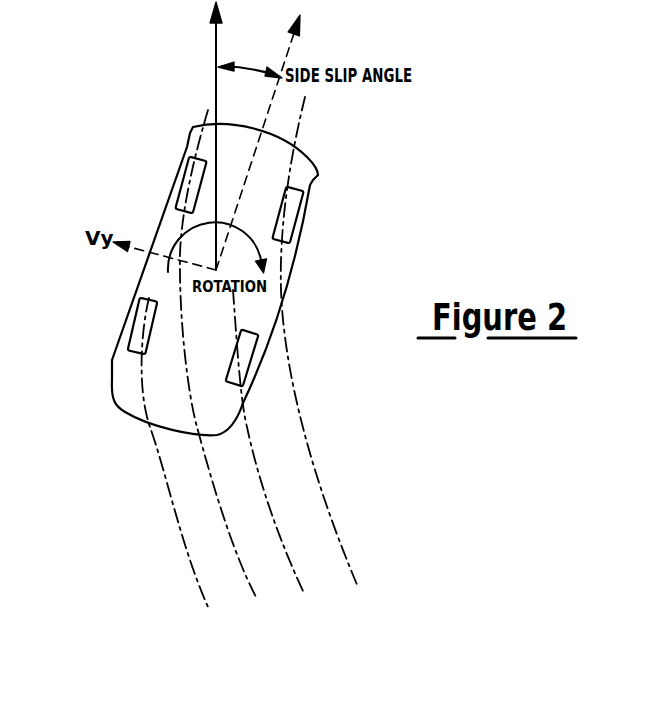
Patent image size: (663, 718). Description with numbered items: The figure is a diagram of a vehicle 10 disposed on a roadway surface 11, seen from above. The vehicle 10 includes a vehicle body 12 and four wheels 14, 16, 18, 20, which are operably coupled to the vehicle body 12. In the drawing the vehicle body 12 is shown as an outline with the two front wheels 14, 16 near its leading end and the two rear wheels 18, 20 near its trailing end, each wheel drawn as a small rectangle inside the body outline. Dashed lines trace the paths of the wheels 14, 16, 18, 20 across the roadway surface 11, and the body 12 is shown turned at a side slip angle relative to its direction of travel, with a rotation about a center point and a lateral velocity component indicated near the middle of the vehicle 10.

The vehicle 10 is at (227, 277).
The roadway surface 11 is at (290, 473).
The vehicle body 12 is at (295, 262).
The wheel 14 is at (183, 180).
The wheel 16 is at (297, 217).
The wheel 18 is at (135, 321).
The wheel 20 is at (253, 360).